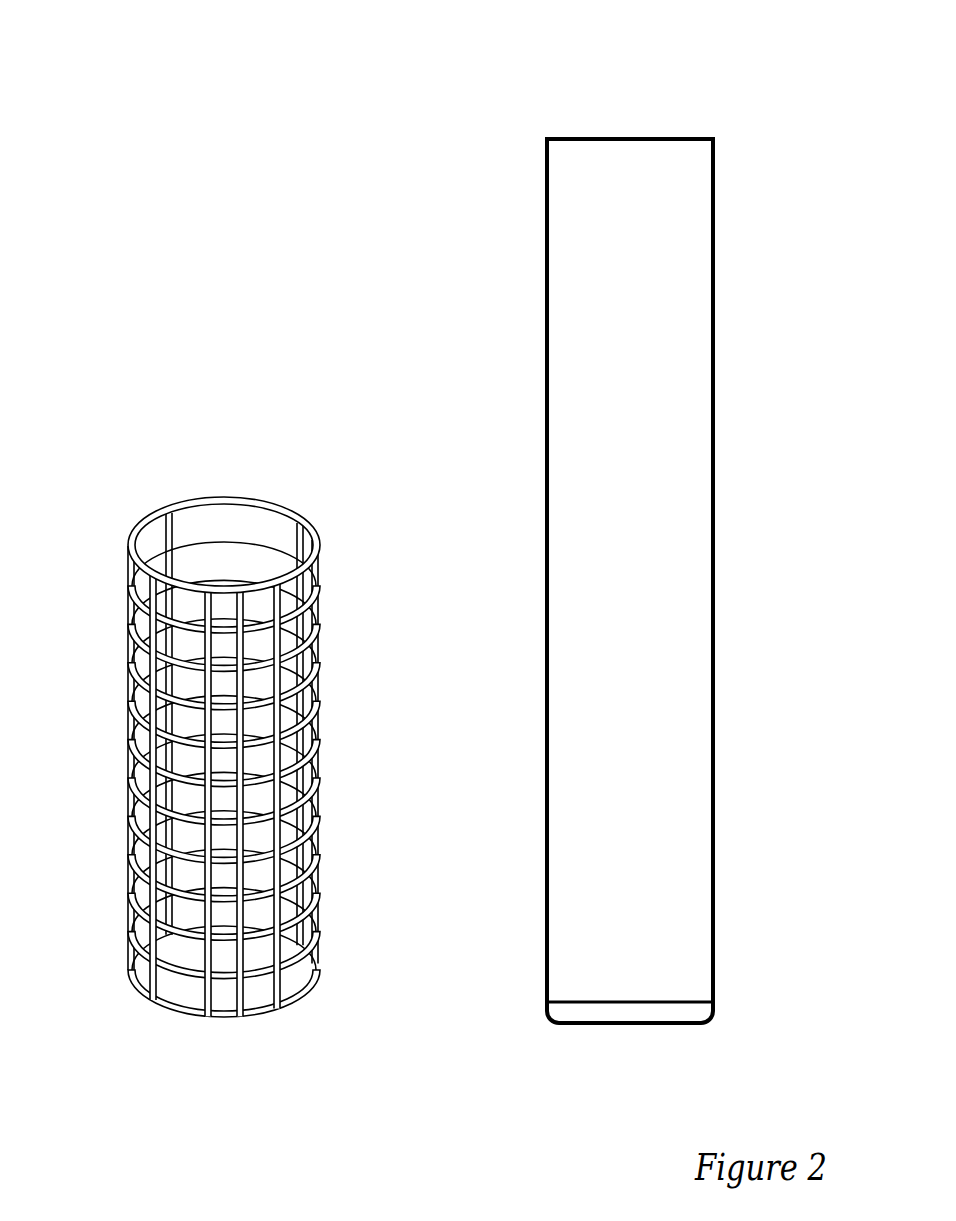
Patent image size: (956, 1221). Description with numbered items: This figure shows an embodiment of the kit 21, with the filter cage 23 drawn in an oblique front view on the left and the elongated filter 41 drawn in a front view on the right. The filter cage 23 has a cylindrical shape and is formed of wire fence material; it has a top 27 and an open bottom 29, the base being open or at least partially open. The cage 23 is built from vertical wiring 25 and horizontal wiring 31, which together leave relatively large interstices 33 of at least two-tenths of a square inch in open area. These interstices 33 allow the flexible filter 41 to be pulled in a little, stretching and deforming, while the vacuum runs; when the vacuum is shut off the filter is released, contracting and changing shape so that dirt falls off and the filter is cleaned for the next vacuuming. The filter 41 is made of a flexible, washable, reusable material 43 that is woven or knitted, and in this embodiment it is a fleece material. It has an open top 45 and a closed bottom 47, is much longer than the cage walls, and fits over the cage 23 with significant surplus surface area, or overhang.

The kit 21 is at (720, 1018).
The filter cage 23 is at (130, 805).
The vertical wiring 25 is at (318, 577).
The top 27 is at (288, 508).
The open bottom 29 is at (292, 987).
The horizontal wiring 31 is at (146, 521).
The interstices 33 is at (210, 522).
The elongated filter 41 is at (715, 632).
The flexible, washable reusable material 43 is at (690, 498).
The open top 45 is at (635, 138).
The closed bottom 47 is at (700, 1009).